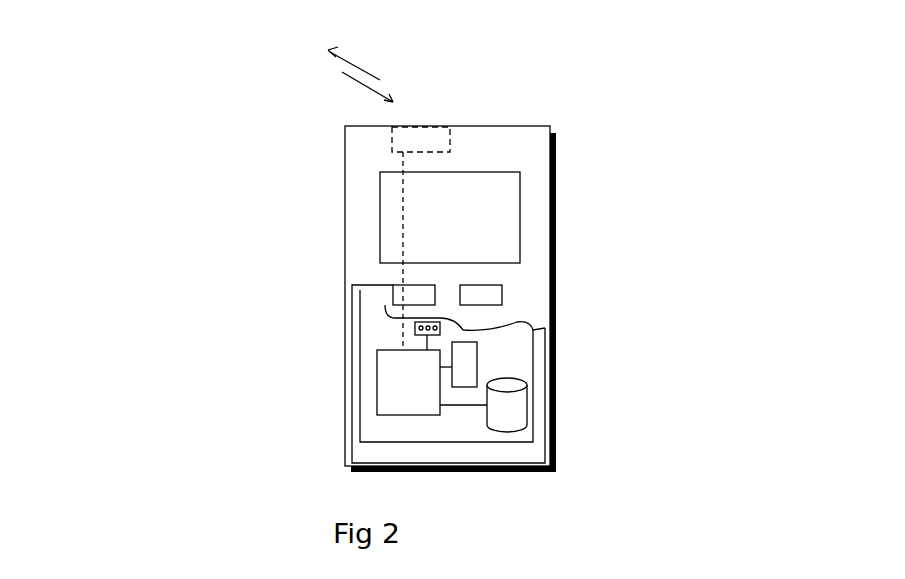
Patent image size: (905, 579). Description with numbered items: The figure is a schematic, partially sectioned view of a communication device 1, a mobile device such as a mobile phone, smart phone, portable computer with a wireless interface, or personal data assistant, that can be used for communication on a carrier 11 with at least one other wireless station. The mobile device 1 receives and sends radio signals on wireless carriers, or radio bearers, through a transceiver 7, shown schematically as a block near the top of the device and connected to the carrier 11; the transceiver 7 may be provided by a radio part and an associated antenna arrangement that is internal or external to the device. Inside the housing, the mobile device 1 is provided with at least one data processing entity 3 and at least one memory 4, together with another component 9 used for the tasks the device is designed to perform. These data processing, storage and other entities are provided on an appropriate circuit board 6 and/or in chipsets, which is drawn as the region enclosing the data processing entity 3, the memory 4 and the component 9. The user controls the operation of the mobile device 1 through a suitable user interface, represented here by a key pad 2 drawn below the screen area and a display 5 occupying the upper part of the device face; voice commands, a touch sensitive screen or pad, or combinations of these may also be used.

The communication device 1 is at (345, 153).
The key pad 2 is at (393, 297).
The data processing entity 3 is at (377, 372).
The memory 4 is at (502, 410).
The display 5 is at (393, 207).
The circuit board 6 is at (377, 428).
The transceiver 7 is at (410, 138).
The other component 9 is at (568, 307).
The carrier 11 is at (384, 32).